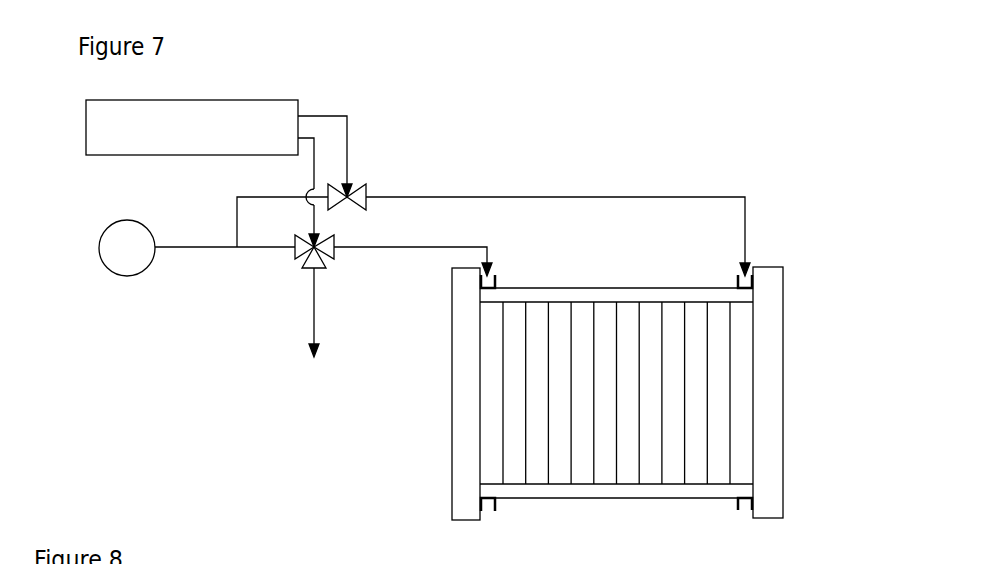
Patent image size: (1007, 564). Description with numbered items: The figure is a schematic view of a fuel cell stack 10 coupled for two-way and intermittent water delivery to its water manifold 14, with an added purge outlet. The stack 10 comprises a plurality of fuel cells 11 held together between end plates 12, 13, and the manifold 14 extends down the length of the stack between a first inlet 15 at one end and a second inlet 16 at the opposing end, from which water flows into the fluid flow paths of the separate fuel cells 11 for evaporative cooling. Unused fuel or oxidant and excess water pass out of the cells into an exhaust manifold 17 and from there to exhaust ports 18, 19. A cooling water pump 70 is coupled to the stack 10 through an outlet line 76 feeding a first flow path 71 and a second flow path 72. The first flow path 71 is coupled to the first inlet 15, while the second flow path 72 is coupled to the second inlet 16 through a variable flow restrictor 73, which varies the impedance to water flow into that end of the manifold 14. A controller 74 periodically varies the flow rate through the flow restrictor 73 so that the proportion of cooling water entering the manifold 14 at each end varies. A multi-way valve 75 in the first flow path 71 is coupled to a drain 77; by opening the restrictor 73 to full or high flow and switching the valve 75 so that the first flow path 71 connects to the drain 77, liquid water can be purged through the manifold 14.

The fuel cell stack 10 is at (619, 386).
The fuel cells 11 is at (573, 310).
The end plate 12 is at (461, 380).
The end plate 13 is at (773, 375).
The manifold 14 is at (526, 293).
The first inlet 15 is at (497, 276).
The second inlet 16 is at (741, 273).
The exhaust manifold 17 is at (620, 493).
The exhaust port 18 is at (497, 513).
The exhaust port 19 is at (737, 506).
The cooling water pump 70 is at (107, 271).
The first flow path 71 is at (413, 249).
The second flow path 72 is at (464, 196).
The variable flow restrictor 73 is at (365, 189).
The controller 74 is at (86, 122).
The multi-way valve 75 is at (298, 256).
The pump outlet line 76 is at (196, 250).
The drain 77 is at (311, 318).